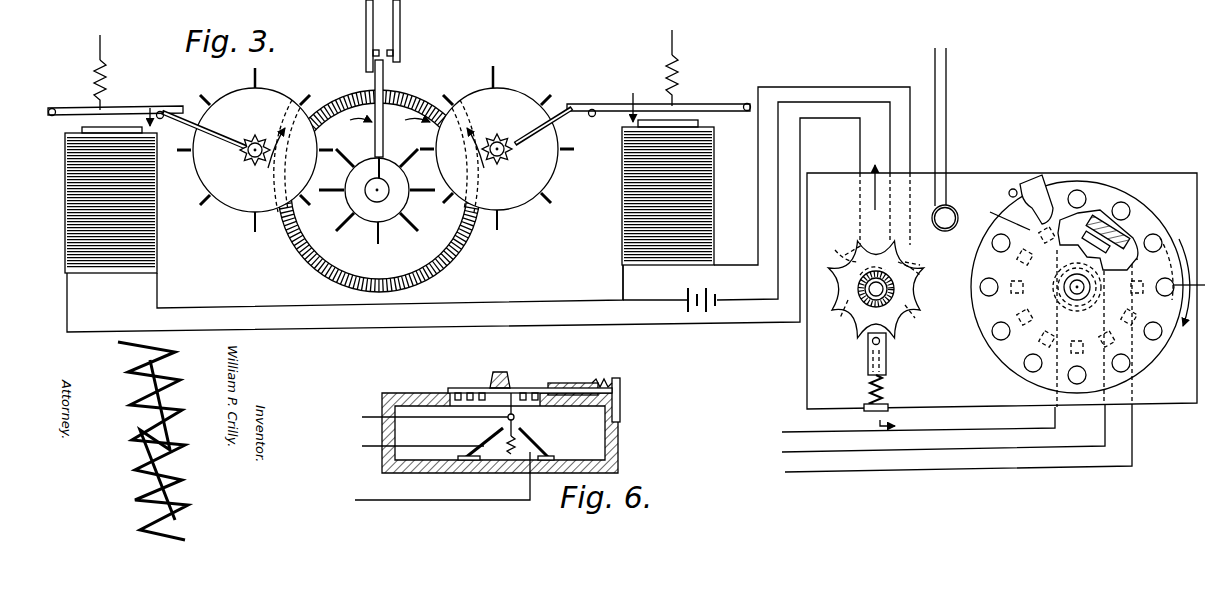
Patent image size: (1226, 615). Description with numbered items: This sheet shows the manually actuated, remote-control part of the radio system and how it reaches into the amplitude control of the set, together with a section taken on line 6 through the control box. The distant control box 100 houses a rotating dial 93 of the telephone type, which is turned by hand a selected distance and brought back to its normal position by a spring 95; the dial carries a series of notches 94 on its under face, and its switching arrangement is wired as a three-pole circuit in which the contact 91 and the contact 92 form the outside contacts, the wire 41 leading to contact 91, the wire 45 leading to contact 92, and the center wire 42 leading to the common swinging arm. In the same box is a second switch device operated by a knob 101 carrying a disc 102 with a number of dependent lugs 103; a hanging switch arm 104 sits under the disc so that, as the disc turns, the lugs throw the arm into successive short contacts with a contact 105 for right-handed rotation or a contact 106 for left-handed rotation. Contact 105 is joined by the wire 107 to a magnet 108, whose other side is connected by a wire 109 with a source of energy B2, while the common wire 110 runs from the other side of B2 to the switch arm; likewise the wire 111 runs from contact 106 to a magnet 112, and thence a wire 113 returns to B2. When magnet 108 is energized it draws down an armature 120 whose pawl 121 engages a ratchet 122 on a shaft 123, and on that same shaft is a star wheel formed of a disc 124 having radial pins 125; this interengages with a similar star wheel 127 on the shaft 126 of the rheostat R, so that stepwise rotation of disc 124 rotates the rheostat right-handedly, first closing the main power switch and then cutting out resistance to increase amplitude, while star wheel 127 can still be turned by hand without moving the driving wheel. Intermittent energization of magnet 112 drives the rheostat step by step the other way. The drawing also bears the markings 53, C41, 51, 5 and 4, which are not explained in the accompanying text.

In FIG. 3, the shaft 53 is at (385, 42).
In FIG. 3, the rheostat R is at (410, 92).
In FIG. 3, the armature 120 is at (122, 110).
In FIG. 3, the pawl 121 is at (215, 133).
In FIG. 3, the ratchet 122 is at (253, 136).
In FIG. 3, the shaft 123 is at (252, 157).
In FIG. 3, the star wheel disc 124 is at (282, 103).
In FIG. 3, the radial pins 125 is at (257, 72).
In FIG. 3, the shaft of rheostat 126 is at (372, 203).
In FIG. 3, the star wheel 127 is at (390, 212).
In FIG. 3, the magnet 108 is at (157, 250).
In FIG. 3, the wire 109 is at (236, 308).
In FIG. 3, the wire 107 is at (520, 325).
In FIG. 6, the wire 107 is at (362, 447).
In FIG. 3, the common wire 110 is at (778, 222).
In FIG. 6, the common wire 110 is at (362, 417).
In FIG. 3, the wire 111 is at (758, 172).
In FIG. 6, the wire 111 is at (437, 502).
In FIG. 3, the magnet 112 is at (622, 215).
In FIG. 3, the wire 113 is at (623, 285).
In FIG. 3, the source of energy B2 is at (716, 296).
In FIG. 3, the control box 100 is at (982, 178).
In FIG. 6, the control box 100 is at (620, 448).
In FIG. 3, the knob 101 is at (855, 305).
In FIG. 6, the knob 101 is at (515, 382).
In FIG. 3, the disc 102 is at (905, 322).
In FIG. 6, the disc 102 is at (455, 393).
In FIG. 3, the dependent lugs 103 is at (852, 262).
In FIG. 6, the dependent lugs 103 is at (470, 402).
In FIG. 3, the hanging switch arm 104 is at (880, 248).
In FIG. 6, the hanging switch arm 104 is at (505, 440).
In FIG. 3, the contact 105 is at (856, 245).
In FIG. 6, the contact 105 is at (496, 435).
In FIG. 3, the contact 106 is at (915, 274).
In FIG. 6, the contact 106 is at (527, 431).
In FIG. 3, the condenser C41 is at (944, 149).
In FIG. 3, the contact 92 is at (1090, 215).
In FIG. 3, the brush 51 is at (1102, 208).
In FIG. 3, the rotor arm 5 is at (1135, 233).
In FIG. 3, the contact 91 is at (1140, 256).
In FIG. 3, the dial 93 is at (1150, 360).
In FIG. 3, the notches 94 is at (1077, 317).
In FIG. 3, the spring 95 is at (1096, 322).
In FIG. 3, the wire 41 is at (805, 474).
In FIG. 3, the center wire 42 is at (786, 452).
In FIG. 3, the wire 45 is at (786, 430).
In FIG. 3, the section line 4 is at (994, 200).
In FIG. 3, the section line 6 is at (885, 160).